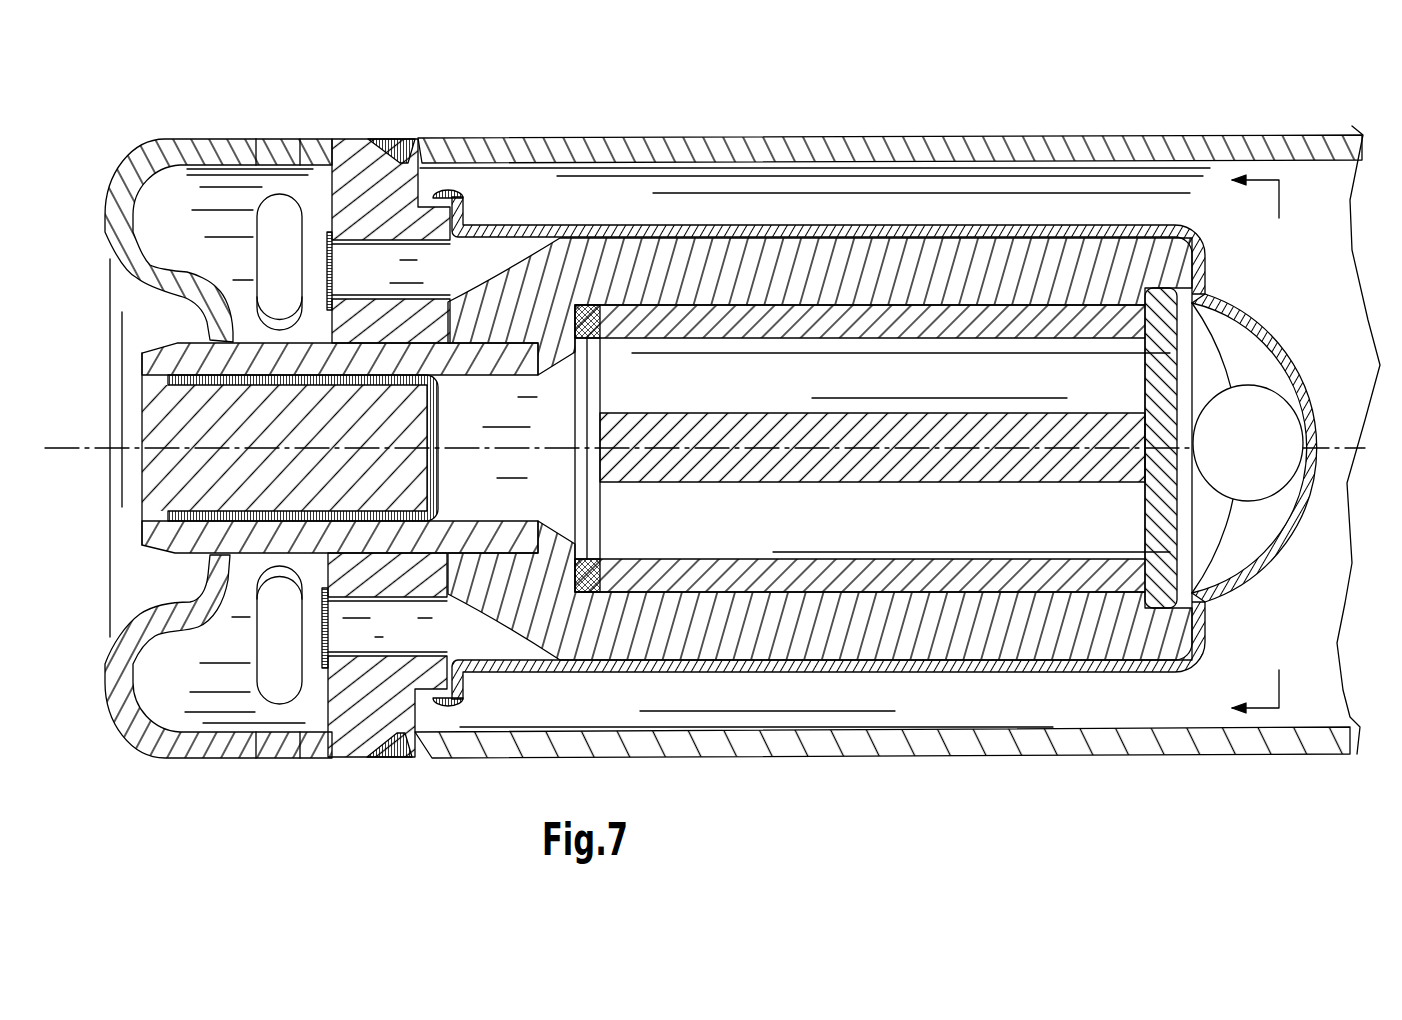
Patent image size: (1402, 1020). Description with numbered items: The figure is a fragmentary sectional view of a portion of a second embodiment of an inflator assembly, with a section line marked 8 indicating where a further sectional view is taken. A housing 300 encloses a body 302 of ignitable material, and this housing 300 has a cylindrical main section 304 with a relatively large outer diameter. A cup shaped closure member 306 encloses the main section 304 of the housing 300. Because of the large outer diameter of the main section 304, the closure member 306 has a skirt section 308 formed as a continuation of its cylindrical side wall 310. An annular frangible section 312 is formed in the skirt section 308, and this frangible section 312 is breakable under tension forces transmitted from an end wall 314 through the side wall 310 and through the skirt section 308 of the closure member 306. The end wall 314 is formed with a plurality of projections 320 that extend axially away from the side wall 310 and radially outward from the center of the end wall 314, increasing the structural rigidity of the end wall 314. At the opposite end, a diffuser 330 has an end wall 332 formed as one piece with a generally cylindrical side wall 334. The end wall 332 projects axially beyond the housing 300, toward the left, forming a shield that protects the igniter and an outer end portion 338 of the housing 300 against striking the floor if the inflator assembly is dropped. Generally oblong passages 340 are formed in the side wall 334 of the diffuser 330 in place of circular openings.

The housing 300 is at (985, 653).
The body of ignitable material 302 is at (1063, 580).
The cylindrical main section 304 is at (823, 630).
The cup shaped closure member 306 is at (1040, 222).
The skirt section 308 is at (528, 223).
The cylindrical side wall 310 is at (778, 225).
The annular frangible section 312 is at (482, 223).
The end wall 314 is at (1203, 267).
The projections 320 is at (1258, 556).
The diffuser 330 is at (217, 138).
The end wall 332 is at (123, 187).
The generally cylindrical side wall 334 is at (313, 745).
The outer end portion 338 is at (245, 557).
The generally oblong passages 340 is at (292, 210).
The section line 8- 8 is at (1242, 446).